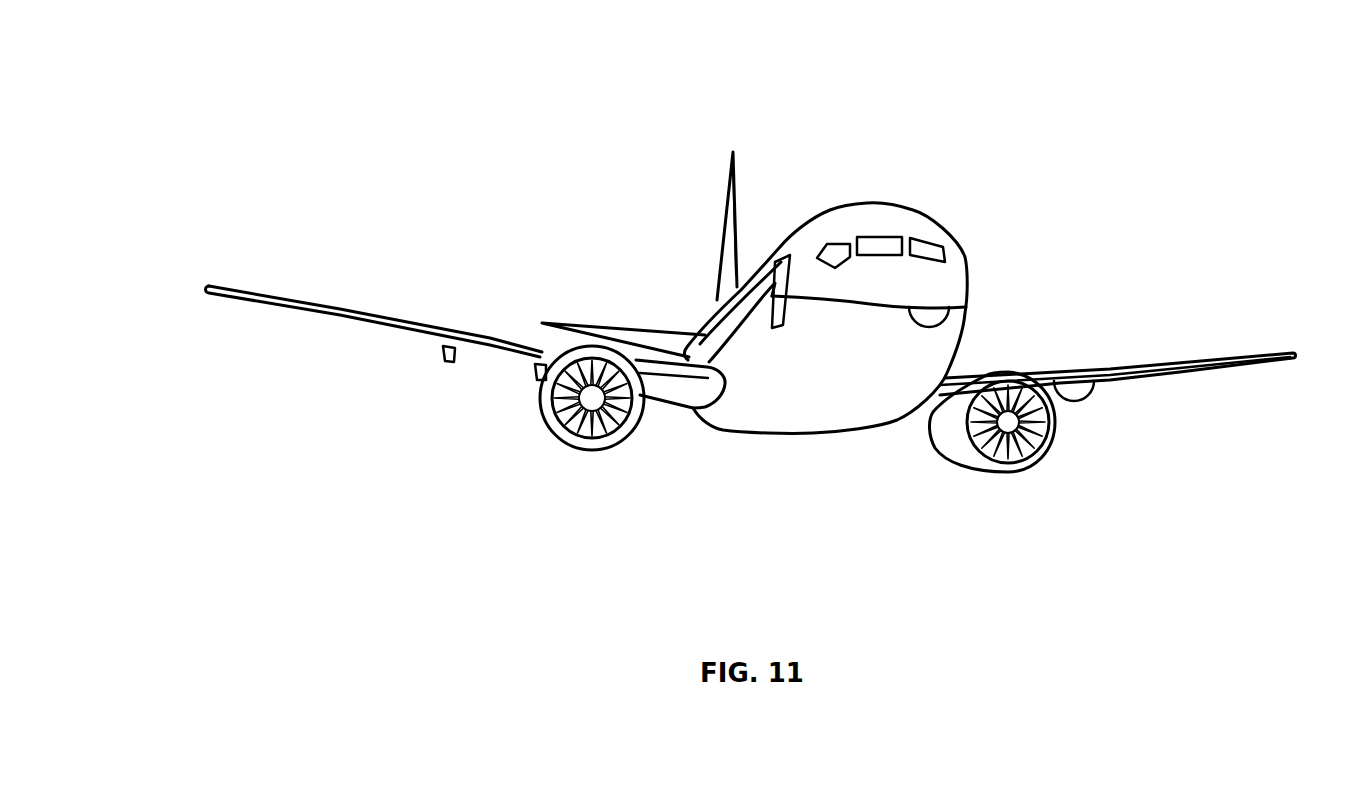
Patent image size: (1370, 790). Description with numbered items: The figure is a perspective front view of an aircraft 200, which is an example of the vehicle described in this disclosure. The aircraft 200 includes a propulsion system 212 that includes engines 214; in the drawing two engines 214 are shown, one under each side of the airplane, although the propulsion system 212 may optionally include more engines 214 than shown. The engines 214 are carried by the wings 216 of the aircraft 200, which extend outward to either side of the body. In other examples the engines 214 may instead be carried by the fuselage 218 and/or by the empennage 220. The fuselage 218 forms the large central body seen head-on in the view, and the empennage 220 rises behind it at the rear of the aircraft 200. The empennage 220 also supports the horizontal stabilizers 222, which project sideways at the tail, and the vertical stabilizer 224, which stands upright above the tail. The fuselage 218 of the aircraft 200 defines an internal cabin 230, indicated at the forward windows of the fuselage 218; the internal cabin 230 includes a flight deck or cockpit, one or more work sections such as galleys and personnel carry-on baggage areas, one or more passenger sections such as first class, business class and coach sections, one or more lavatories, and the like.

The aircraft 200 is at (480, 94).
The propulsion system 212 is at (498, 407).
The engines 214 is at (584, 449).
The wings 216 is at (353, 315).
The fuselage 218 is at (966, 272).
The empennage 220 is at (717, 300).
The horizontal stabilizers 222 is at (583, 322).
The vertical stabilizer 224 is at (728, 193).
The internal cabin 230 is at (882, 243).